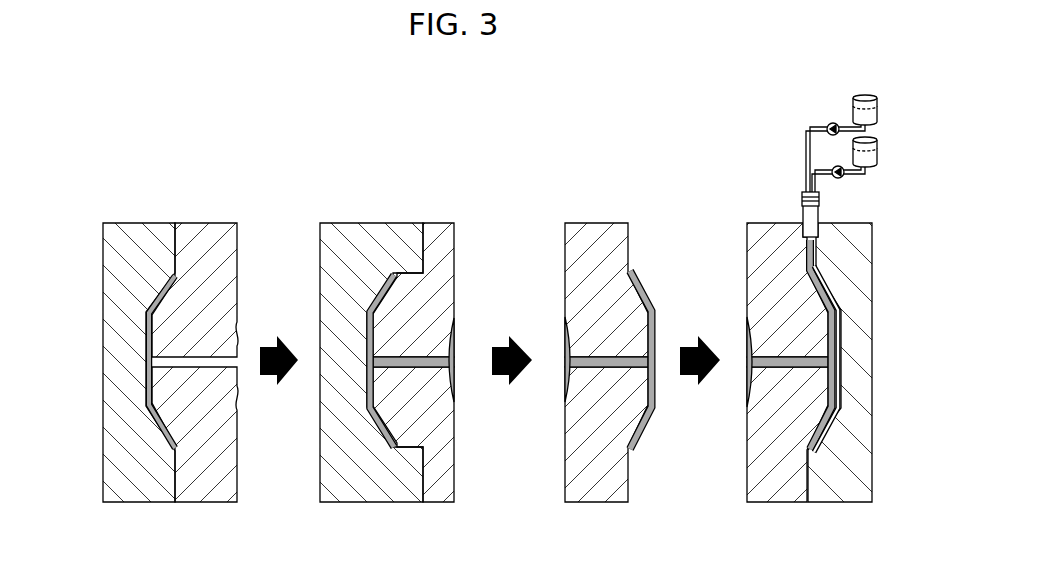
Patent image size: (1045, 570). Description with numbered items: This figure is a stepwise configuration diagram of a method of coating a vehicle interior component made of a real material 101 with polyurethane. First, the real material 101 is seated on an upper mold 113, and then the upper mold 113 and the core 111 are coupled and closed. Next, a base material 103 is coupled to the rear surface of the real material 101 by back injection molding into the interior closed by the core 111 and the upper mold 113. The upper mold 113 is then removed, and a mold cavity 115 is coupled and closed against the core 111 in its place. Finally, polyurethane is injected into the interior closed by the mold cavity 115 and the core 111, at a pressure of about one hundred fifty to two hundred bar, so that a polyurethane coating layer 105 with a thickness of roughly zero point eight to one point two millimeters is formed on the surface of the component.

The real material 101 is at (162, 433).
The base material 103 is at (392, 429).
The polyurethane coating layer 105 is at (828, 433).
The core 111 is at (225, 271).
The upper mold 113 is at (107, 324).
The mold cavity 115 is at (863, 265).